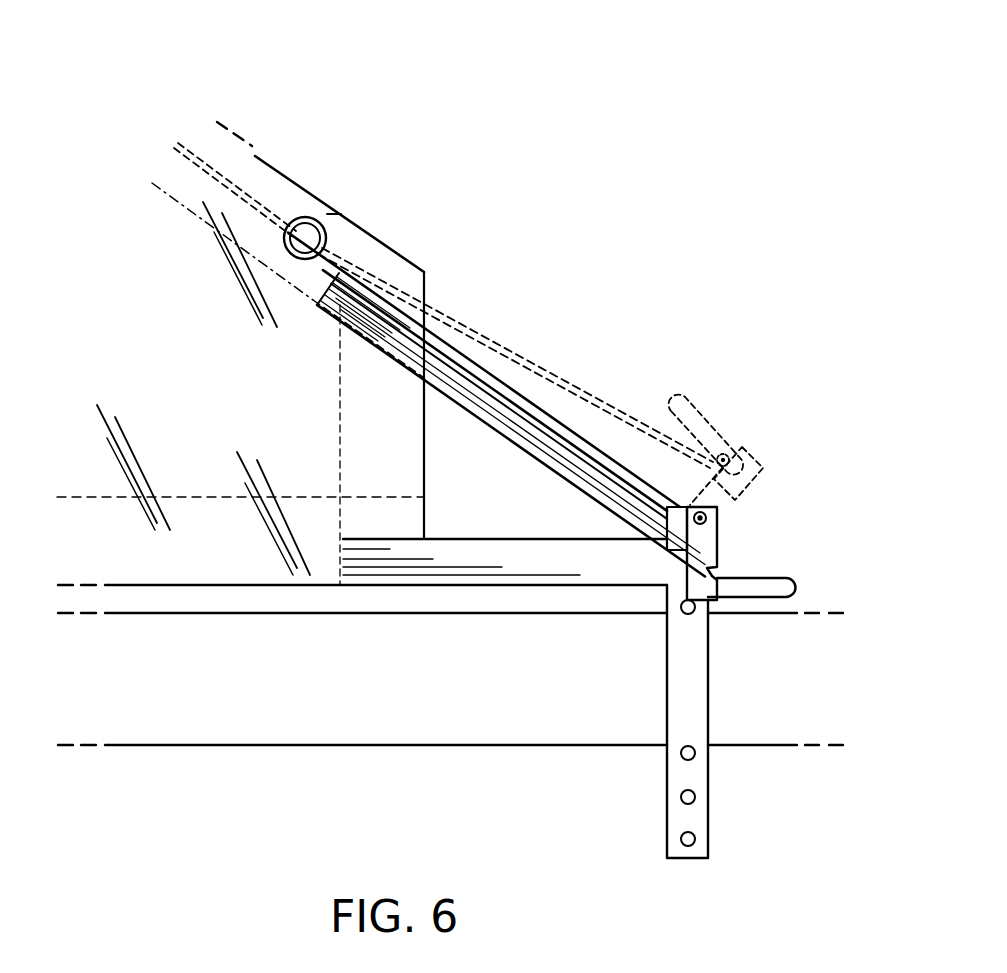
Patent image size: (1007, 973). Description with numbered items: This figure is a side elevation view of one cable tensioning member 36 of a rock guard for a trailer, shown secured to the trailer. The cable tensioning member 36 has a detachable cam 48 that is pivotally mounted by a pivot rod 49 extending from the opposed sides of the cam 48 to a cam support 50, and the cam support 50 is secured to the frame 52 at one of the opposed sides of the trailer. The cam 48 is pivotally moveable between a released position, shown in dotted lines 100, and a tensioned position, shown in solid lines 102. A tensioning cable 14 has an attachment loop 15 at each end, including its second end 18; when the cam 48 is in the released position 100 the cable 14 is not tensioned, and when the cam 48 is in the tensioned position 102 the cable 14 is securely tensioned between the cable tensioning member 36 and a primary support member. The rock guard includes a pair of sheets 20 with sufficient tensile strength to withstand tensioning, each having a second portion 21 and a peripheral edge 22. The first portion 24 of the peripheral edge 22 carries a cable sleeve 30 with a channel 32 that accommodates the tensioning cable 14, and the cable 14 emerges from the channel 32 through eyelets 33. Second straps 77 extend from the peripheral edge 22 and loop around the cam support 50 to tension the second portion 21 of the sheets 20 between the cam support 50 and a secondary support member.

The tensioning cable 14 is at (533, 423).
The attachment loop 15 is at (723, 458).
The second end 18 is at (722, 462).
The pair of sheets 20 is at (158, 345).
The second portion 21 is at (232, 435).
The peripheral edge 22 is at (296, 172).
The first portion 24 is at (320, 192).
The cable sleeve 30 is at (338, 212).
The channel 32 is at (263, 168).
The eyelets 33 is at (330, 235).
The cable tensioning member 36 is at (748, 320).
The detachable cam 48 is at (752, 478).
The pivot rod 49 is at (718, 513).
The cam support 50 is at (708, 665).
The frame 52 is at (480, 745).
The second straps 77 is at (470, 397).
The released position 100 is at (718, 415).
The tensioned position 102 is at (778, 578).